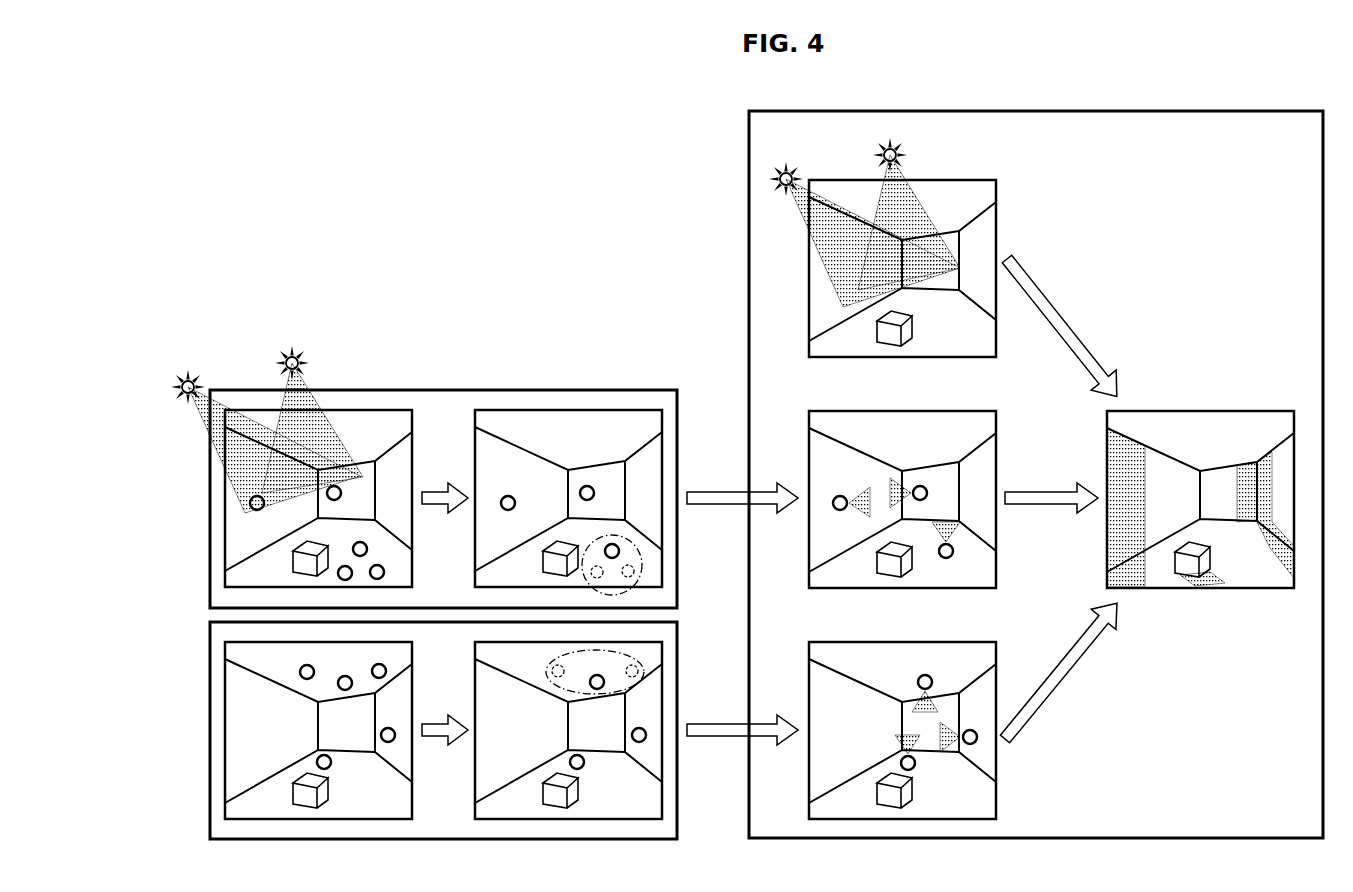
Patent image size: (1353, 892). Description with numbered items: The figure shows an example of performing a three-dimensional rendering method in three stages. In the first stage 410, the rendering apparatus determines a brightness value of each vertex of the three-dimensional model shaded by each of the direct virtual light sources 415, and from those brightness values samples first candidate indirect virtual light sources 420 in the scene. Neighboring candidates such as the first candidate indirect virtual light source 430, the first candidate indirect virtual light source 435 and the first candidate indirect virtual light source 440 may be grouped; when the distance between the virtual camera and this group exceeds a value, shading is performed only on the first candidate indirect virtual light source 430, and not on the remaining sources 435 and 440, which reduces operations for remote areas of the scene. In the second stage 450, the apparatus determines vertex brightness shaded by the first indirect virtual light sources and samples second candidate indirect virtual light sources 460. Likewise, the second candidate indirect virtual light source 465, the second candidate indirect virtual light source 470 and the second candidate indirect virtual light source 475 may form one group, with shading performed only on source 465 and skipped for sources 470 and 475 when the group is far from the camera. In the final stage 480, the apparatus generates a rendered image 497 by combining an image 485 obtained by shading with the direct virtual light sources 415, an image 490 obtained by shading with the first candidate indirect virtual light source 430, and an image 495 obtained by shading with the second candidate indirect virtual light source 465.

The sampling of first indirect virtual light source 410 is at (210, 498).
The direct virtual light sources 415 is at (178, 377).
The first candidate indirect virtual light sources 420 is at (336, 486).
The first candidate indirect virtual light source 430 is at (619, 547).
The first candidate indirect virtual light source 435 is at (645, 590).
The first candidate indirect virtual light source 440 is at (603, 578).
The sampling of second indirect virtual light source 450 is at (210, 728).
The second candidate indirect virtual light sources 460 is at (343, 690).
The second candidate indirect virtual light source 465 is at (602, 675).
The second candidate indirect virtual light source 470 is at (556, 678).
The second candidate indirect virtual light source 475 is at (640, 674).
The image combining stage 480 is at (1035, 110).
The image 485 is at (996, 216).
The image 490 is at (903, 410).
The image 495 is at (903, 642).
The rendered image 497 is at (1200, 411).